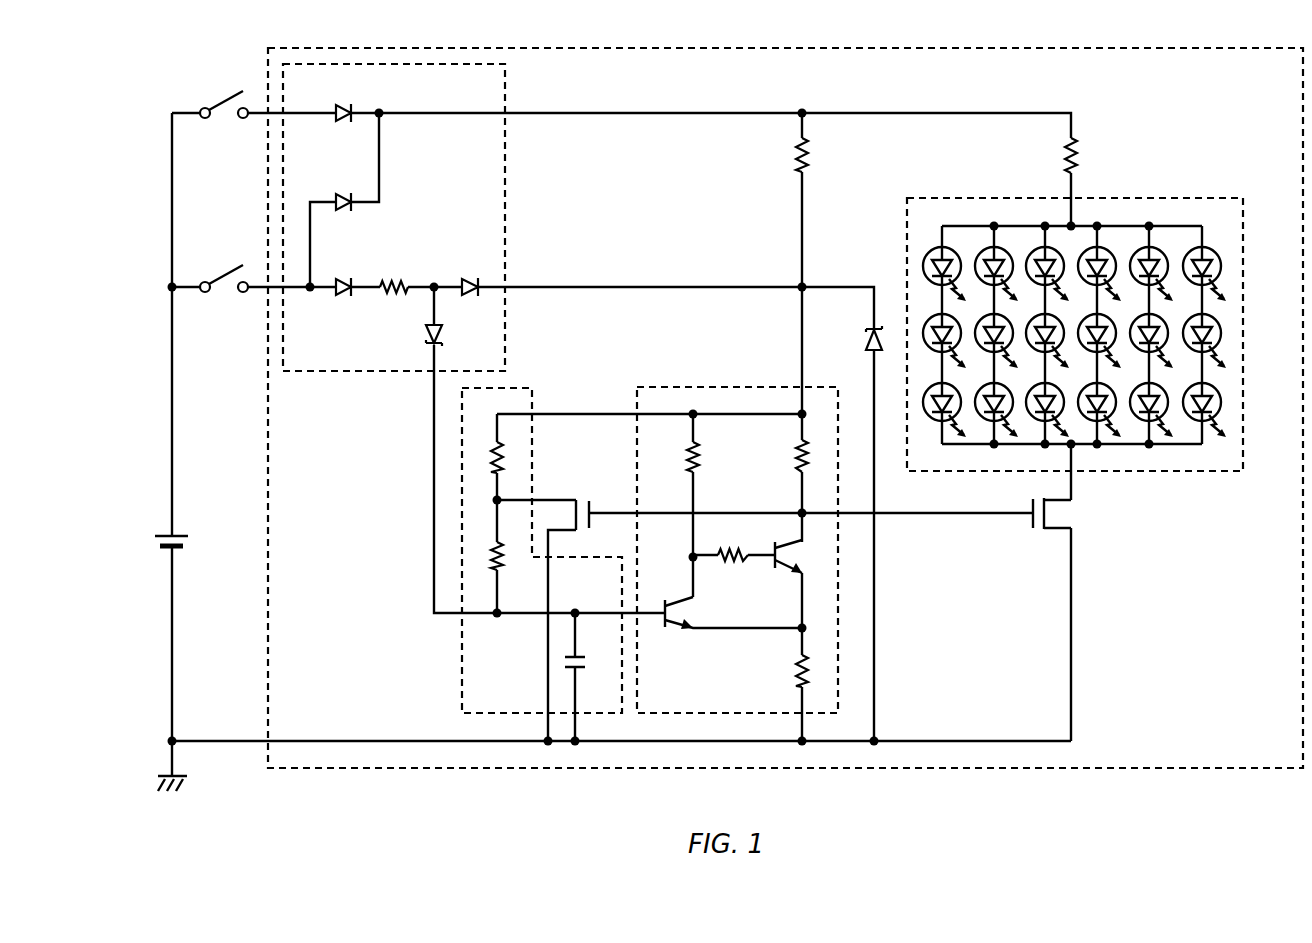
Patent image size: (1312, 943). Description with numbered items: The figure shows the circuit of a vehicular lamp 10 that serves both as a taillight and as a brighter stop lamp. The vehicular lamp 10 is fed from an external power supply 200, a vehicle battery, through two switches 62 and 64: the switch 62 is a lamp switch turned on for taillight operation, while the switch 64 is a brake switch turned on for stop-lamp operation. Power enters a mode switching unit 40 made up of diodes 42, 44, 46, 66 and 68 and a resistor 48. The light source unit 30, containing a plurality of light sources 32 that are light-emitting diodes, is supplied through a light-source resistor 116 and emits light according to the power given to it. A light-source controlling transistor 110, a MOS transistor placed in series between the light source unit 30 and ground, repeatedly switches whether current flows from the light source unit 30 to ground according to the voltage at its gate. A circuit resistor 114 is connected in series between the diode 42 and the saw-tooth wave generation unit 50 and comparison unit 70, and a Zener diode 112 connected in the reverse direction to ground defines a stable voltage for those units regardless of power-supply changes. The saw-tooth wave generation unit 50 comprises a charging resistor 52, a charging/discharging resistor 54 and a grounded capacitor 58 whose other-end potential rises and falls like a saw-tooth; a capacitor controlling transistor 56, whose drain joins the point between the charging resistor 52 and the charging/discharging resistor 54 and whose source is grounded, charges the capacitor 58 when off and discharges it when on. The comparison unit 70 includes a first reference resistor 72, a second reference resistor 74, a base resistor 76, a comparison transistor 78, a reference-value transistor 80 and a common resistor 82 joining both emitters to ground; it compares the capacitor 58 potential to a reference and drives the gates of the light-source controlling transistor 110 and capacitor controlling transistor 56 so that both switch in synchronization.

The vehicular lamp 10 is at (762, 48).
The light source unit 30 is at (1164, 198).
The light source 32 is at (1222, 264).
The mode switching unit 40 is at (505, 190).
The diode 42 is at (344, 122).
The diode 44 is at (344, 211).
The diode 46 is at (344, 296).
The resistor 48 is at (400, 280).
The saw-tooth wave generation unit 50 is at (462, 674).
The charging resistor 52 is at (497, 440).
The charging/discharging resistor 54 is at (500, 580).
The capacitor controlling transistor 56 is at (583, 497).
The capacitor 58 is at (584, 667).
The switch 62 is at (221, 119).
The switch 64 is at (221, 293).
The diode 66 is at (470, 280).
The diode 68 is at (444, 334).
The comparison unit 70 is at (734, 387).
The first reference resistor 72 is at (703, 452).
The second reference resistor 74 is at (796, 470).
The base resistor 76 is at (731, 565).
The comparison transistor 78 is at (678, 632).
The reference-value transistor 80 is at (783, 572).
The common resistor 82 is at (796, 672).
The light-source controlling transistor 110 is at (1082, 512).
The Zener diode 112 is at (877, 326).
The circuit resistor 114 is at (795, 158).
The light-source resistor 116 is at (1064, 157).
The external power supply 200 is at (185, 534).